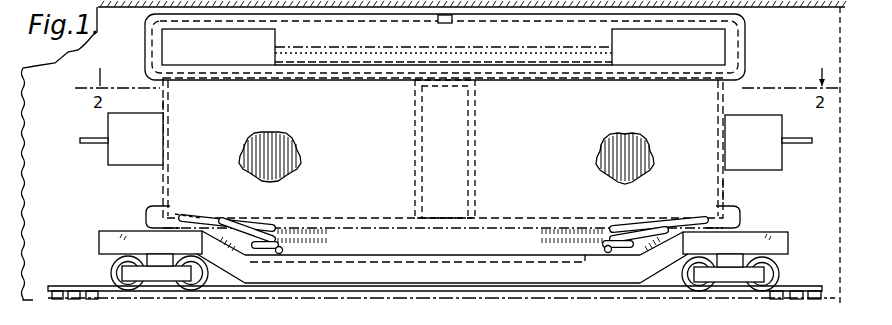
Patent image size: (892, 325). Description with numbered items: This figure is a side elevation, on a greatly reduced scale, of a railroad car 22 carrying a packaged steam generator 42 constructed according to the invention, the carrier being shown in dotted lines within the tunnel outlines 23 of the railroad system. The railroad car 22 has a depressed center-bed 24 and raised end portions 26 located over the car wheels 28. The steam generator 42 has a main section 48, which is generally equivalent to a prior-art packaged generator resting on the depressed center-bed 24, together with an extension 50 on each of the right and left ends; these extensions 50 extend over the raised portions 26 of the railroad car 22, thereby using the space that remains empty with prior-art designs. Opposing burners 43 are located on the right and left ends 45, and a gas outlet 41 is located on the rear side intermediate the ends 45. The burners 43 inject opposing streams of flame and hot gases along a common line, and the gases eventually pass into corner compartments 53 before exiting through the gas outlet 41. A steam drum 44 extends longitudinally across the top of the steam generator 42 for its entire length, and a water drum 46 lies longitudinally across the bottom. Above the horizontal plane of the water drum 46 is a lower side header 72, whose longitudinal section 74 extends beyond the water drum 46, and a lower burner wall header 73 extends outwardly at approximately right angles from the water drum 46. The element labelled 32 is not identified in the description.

The railroad car 22 is at (521, 289).
The tunnel outlines 23 is at (757, 12).
The depressed center-bed 24 is at (590, 263).
The raised end portions 26 is at (98, 240).
The car wheels 28 is at (110, 272).
The contact arm 32 is at (88, 138).
The gas outlet 41 is at (460, 170).
The packaged steam generator 42 is at (729, 100).
The burners 43 is at (110, 165).
The steam drum 44 is at (740, 70).
The ends 45 is at (162, 101).
The water drum 46 is at (360, 245).
The main section 48 is at (268, 162).
The extensions 50 is at (443, 89).
The corner compartments 53 is at (645, 160).
The lower side header 72 is at (146, 218).
The lower burner wall header 73 is at (282, 253).
The longitudinal section 74 is at (210, 212).